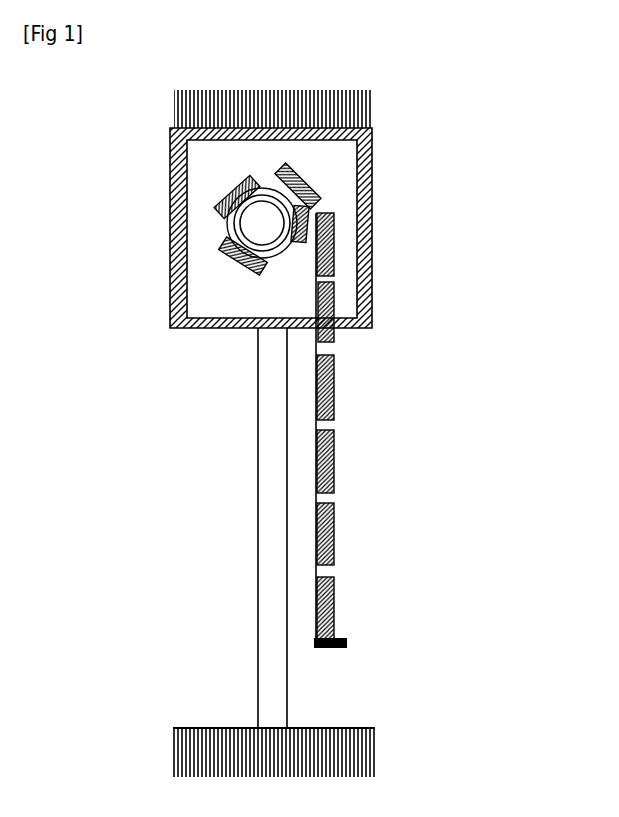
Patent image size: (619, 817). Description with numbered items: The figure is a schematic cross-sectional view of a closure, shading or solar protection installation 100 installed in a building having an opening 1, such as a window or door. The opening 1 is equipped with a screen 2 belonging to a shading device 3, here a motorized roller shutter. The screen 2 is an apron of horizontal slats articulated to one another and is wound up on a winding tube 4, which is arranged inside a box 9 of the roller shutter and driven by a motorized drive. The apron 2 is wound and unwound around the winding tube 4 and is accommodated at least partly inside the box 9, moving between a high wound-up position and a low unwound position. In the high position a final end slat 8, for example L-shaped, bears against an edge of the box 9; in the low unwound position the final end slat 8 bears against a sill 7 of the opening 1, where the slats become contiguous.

The closure, shading or solar protection installation 100 is at (493, 247).
The opening 1 is at (227, 557).
The screen 2 is at (330, 390).
The shading device 3 is at (385, 500).
The winding tube 4 is at (246, 232).
The sill 7 is at (237, 716).
The final end slat 8 is at (333, 597).
The box 9 is at (168, 168).